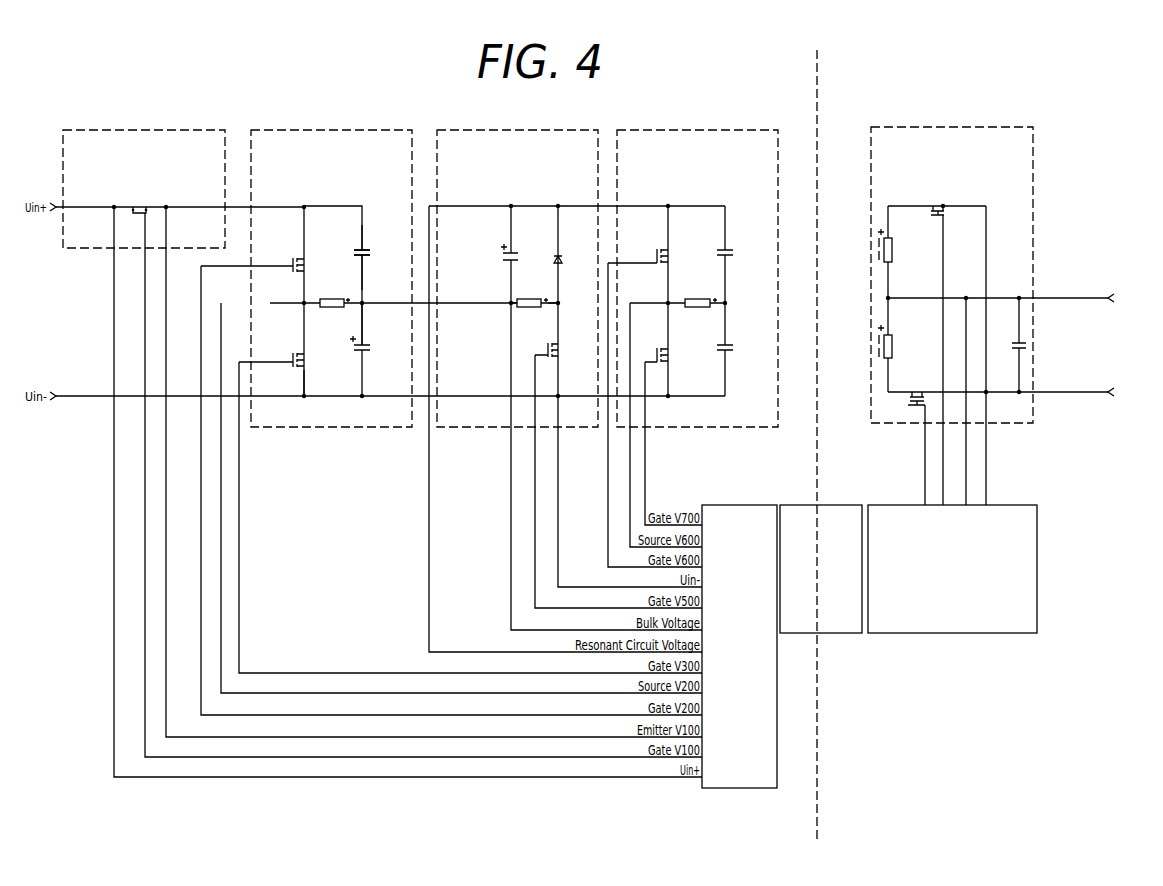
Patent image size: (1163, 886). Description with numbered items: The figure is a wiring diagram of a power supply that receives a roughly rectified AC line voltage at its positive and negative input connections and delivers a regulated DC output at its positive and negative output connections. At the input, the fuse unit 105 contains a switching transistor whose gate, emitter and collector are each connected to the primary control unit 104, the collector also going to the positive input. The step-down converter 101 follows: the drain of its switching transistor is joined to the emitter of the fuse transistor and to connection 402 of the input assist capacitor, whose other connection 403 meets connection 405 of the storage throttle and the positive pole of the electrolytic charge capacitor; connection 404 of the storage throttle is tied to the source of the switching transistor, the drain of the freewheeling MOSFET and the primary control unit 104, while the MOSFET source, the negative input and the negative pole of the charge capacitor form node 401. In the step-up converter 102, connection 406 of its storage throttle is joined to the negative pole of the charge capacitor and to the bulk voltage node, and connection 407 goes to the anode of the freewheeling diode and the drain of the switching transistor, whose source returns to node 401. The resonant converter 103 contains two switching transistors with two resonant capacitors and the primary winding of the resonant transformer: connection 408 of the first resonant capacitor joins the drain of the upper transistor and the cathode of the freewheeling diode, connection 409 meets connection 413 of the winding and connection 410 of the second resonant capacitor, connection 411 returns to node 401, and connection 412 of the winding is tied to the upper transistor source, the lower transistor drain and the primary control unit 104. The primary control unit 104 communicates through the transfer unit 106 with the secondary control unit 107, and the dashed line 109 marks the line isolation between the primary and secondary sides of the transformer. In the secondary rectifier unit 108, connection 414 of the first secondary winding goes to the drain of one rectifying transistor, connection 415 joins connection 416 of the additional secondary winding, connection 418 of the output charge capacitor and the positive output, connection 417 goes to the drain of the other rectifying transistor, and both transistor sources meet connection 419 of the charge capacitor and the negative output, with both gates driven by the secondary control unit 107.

The step-down converter 101 is at (306, 278).
The step-up converter 102 is at (543, 278).
The resonant converter 103 is at (693, 278).
The primary control unit 104 is at (739, 646).
The fuse unit 105 is at (144, 189).
The transfer unit 106 is at (821, 569).
The secondary control unit 107 is at (952, 419).
The secondary rectifier unit 108 is at (1008, 275).
The dashed line 109 is at (812, 88).
The node 401 is at (305, 397).
The connection of capacitor C100 402 is at (363, 249).
The connection of capacitor C100 403 is at (363, 257).
The connection of storage throttle L100 404 is at (304, 280).
The connection of storage throttle L100 405 is at (363, 304).
The connection of storage throttle L200 406 is at (510, 302).
The connection of storage throttle L200 407 is at (560, 306).
The connection of capacitor C400 408 is at (726, 249).
The connection of capacitor C400 409 is at (726, 262).
The connection of capacitor C500 410 is at (726, 318).
The connection of capacitor C500 411 is at (726, 361).
The connection of primary winding TR100/W1 412 is at (667, 302).
The connection of primary winding TR100/W1 413 is at (726, 304).
The connection of secondary winding TR100/W2 414 is at (889, 232).
The connection of secondary winding TR100/W2 415 is at (889, 265).
The connection of secondary winding TR100/W3 416 is at (889, 312).
The connection of secondary winding TR100/W3 417 is at (889, 370).
The connection of capacitor C600 418 is at (1018, 341).
The connection of capacitor C600 419 is at (1018, 352).